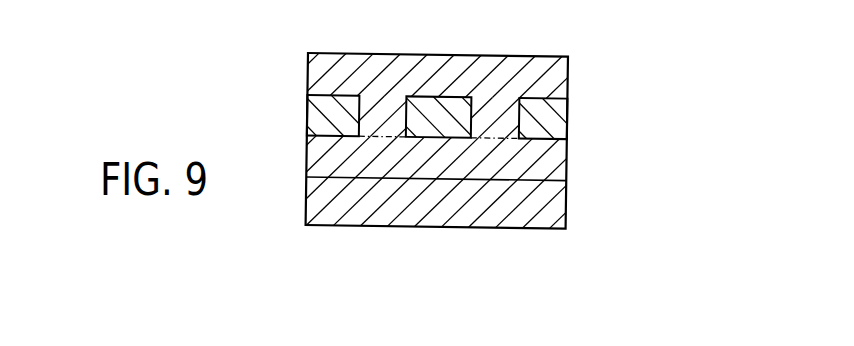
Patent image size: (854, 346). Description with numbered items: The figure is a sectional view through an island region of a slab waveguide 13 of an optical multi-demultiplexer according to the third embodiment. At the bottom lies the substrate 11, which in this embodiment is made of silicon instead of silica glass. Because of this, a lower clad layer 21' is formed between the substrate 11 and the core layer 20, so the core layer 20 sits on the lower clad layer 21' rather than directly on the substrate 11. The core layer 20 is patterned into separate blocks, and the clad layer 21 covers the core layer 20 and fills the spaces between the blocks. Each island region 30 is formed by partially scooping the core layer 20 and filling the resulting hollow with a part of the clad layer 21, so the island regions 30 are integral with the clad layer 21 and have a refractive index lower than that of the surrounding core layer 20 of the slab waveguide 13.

The substrate 11 is at (553, 204).
The input slab waveguide 13 is at (645, 80).
The core layer 20 is at (312, 122).
The clad layer 21 is at (437, 71).
The lower clad layer 21' is at (464, 157).
The island region 30 is at (370, 118).